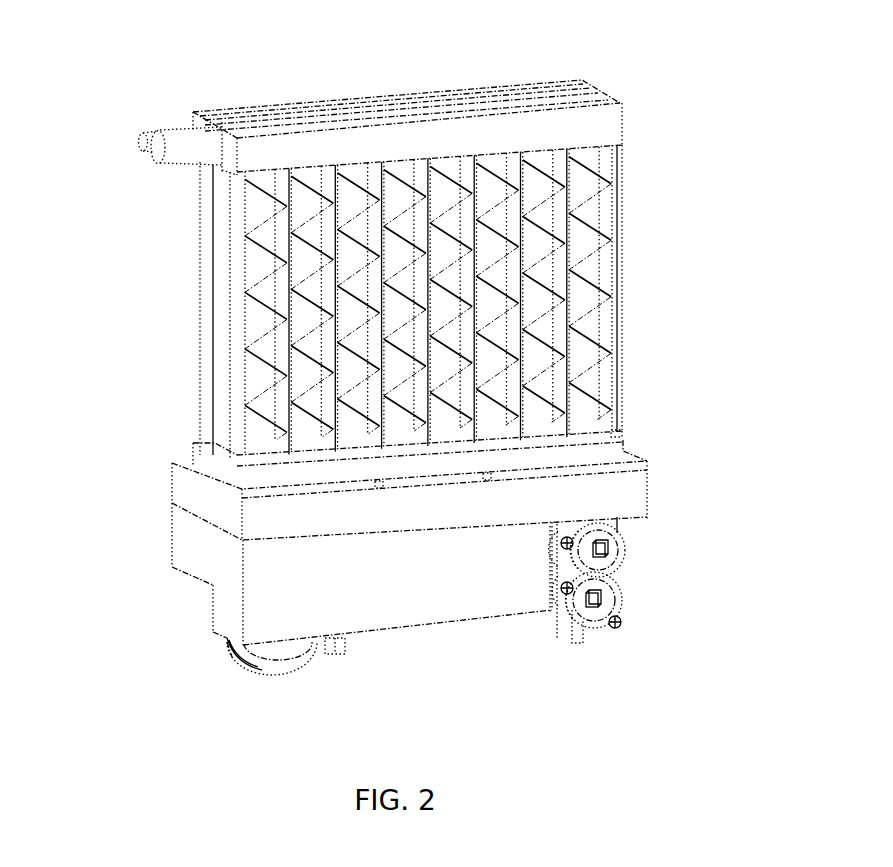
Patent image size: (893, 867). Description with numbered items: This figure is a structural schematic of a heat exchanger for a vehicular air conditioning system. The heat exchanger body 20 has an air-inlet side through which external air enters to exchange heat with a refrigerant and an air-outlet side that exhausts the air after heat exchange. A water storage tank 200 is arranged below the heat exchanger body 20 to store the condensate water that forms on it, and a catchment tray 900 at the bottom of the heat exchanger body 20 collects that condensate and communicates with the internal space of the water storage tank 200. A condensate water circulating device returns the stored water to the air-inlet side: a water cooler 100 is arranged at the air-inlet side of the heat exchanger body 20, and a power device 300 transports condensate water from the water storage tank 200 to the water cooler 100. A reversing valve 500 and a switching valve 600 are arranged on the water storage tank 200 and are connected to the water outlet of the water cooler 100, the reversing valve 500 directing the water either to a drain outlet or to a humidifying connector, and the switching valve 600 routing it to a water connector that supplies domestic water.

The heat exchanger body 20 is at (202, 272).
The water cooler 100 is at (378, 257).
The water storage tank 200 is at (380, 600).
The power device 300 is at (270, 661).
The reversing valve 500 is at (590, 593).
The switching valve 600 is at (607, 553).
The catchment tray 900 is at (613, 488).